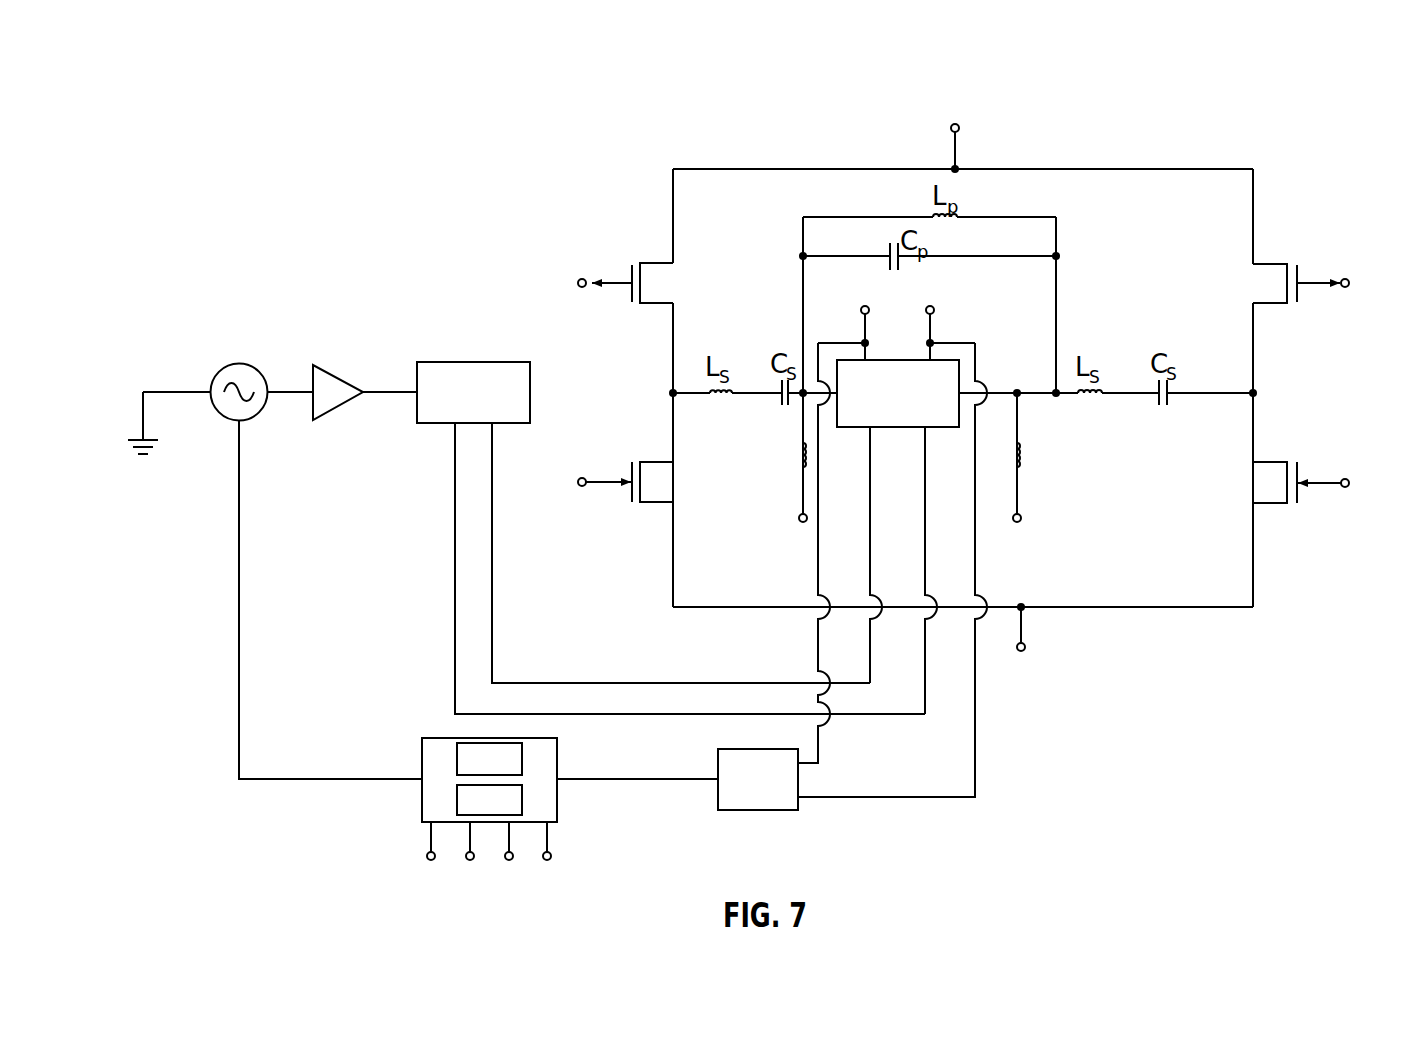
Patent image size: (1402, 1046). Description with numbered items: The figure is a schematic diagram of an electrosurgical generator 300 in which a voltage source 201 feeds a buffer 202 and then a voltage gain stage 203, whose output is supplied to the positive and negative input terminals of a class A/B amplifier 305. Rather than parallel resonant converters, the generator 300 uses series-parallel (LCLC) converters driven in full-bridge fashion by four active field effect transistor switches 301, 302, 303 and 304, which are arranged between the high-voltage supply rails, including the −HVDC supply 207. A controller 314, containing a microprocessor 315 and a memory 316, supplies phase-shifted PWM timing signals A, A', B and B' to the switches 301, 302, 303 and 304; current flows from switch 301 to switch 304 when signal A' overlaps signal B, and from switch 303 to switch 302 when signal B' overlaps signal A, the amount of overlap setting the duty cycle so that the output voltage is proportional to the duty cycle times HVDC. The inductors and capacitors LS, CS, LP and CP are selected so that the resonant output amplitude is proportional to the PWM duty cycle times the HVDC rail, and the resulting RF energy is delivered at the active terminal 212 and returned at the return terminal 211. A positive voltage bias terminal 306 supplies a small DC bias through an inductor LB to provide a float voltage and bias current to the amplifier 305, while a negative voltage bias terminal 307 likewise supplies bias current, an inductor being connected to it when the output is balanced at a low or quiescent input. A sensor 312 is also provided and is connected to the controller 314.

The electrosurgical generator 300 is at (365, 207).
The voltage source 201 is at (238, 363).
The buffer 202 is at (313, 364).
The voltage gain stage 203 is at (473, 362).
The FET switch 301 is at (675, 284).
The FET switch 302 is at (675, 483).
The FET switch 303 is at (1253, 284).
The FET switch 304 is at (1253, 483).
The class A/B amplifier 305 is at (880, 389).
The positive voltage bias terminal 306 is at (800, 517).
The negative voltage bias terminal 307 is at (1022, 515).
The return terminal 211 is at (932, 304).
The active terminal 212 is at (863, 307).
The −HVDC supply 207 is at (1025, 656).
The sensor 312 is at (740, 793).
The controller 314 is at (441, 738).
The microprocessor 315 is at (471, 773).
The memory 316 is at (471, 813).